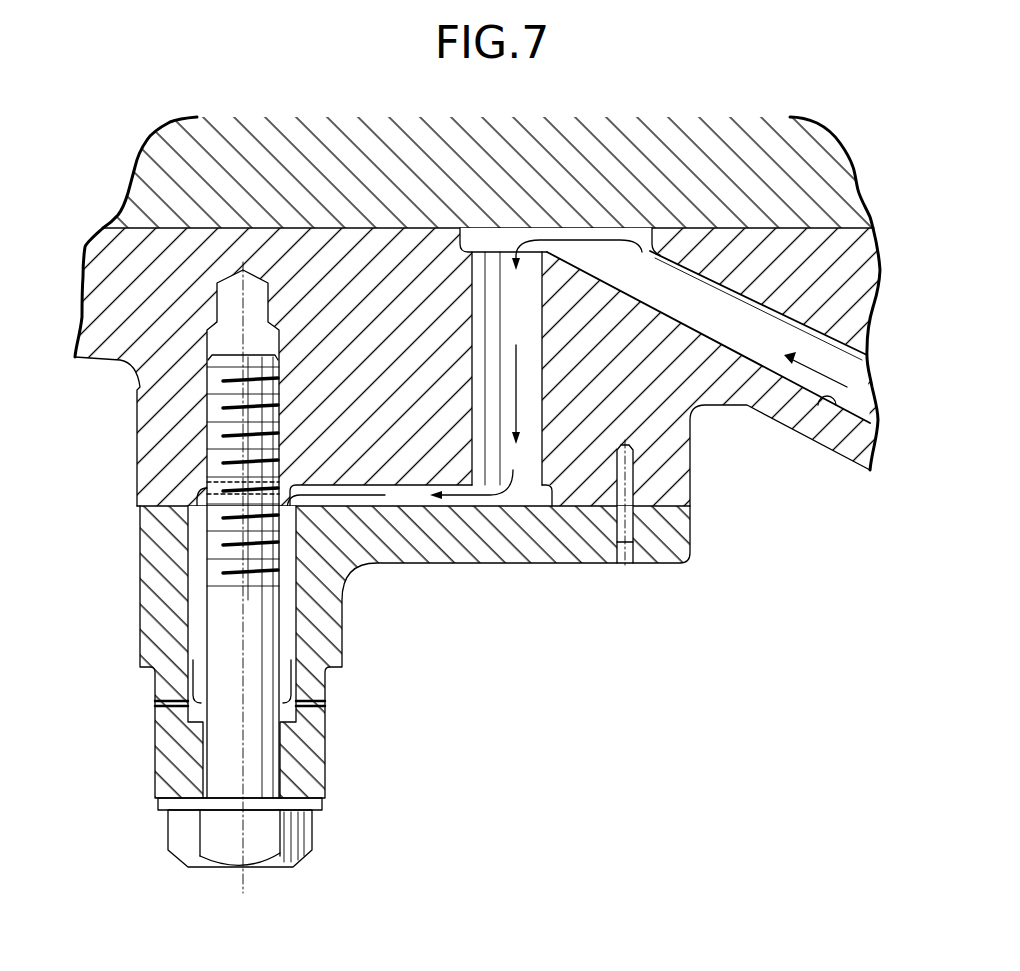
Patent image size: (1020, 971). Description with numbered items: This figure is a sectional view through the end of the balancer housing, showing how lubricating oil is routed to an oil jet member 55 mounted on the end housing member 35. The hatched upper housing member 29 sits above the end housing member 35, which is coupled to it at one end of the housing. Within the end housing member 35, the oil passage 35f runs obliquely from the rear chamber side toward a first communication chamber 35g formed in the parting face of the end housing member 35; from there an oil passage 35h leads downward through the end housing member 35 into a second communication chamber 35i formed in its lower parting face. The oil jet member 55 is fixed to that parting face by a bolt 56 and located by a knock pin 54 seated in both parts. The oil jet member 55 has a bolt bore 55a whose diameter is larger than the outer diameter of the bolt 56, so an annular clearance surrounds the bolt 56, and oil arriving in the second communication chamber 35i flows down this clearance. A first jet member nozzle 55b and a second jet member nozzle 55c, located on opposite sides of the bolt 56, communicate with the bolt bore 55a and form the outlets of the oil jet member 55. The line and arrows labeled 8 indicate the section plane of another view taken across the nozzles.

The upper housing member 29 is at (157, 168).
The end housing member 35 is at (128, 428).
The first communication chamber 35g is at (627, 247).
The oil passage 35h is at (535, 350).
The second communication chamber 35i is at (402, 485).
The oil passage 35f is at (813, 418).
The knock pin 54 is at (630, 525).
The oil jet member 55 is at (522, 572).
The bolt bore 55a is at (297, 602).
The first jet member nozzle 55b is at (153, 708).
The second jet member nozzle 55c is at (322, 708).
The bolt 56 is at (267, 853).
The section line 8- 8 is at (378, 703).